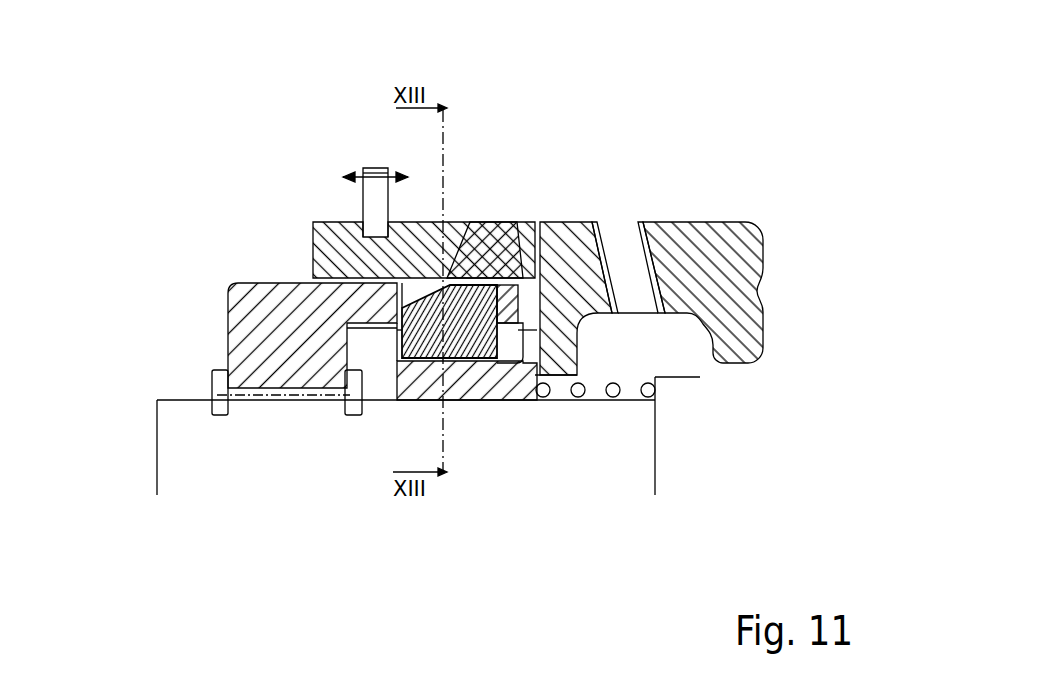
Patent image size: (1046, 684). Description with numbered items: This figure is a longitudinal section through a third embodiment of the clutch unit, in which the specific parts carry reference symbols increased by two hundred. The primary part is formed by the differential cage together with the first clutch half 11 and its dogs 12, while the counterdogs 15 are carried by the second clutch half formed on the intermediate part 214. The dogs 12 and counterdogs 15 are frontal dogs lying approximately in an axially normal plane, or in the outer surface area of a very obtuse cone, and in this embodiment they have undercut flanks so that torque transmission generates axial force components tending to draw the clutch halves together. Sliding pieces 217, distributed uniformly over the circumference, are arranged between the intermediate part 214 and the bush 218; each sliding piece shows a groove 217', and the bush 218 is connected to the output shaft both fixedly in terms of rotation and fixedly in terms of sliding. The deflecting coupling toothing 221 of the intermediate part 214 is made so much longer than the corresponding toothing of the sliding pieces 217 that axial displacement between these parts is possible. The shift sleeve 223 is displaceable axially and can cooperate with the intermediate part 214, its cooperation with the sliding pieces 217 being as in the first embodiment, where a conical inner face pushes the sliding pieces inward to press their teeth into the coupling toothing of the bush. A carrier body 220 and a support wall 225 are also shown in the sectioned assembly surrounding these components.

The first clutch half 11 is at (685, 247).
The dogs 12 is at (625, 245).
The counterdogs 15 is at (641, 233).
The intermediate part 214 is at (558, 245).
The sliding pieces 217 is at (282, 323).
The groove 217' is at (257, 262).
The bush 218 is at (275, 375).
The carrier body 220 is at (397, 400).
The deflecting coupling toothing 221 is at (510, 360).
The shift sleeve 223 is at (338, 256).
The support wall 225 is at (513, 277).